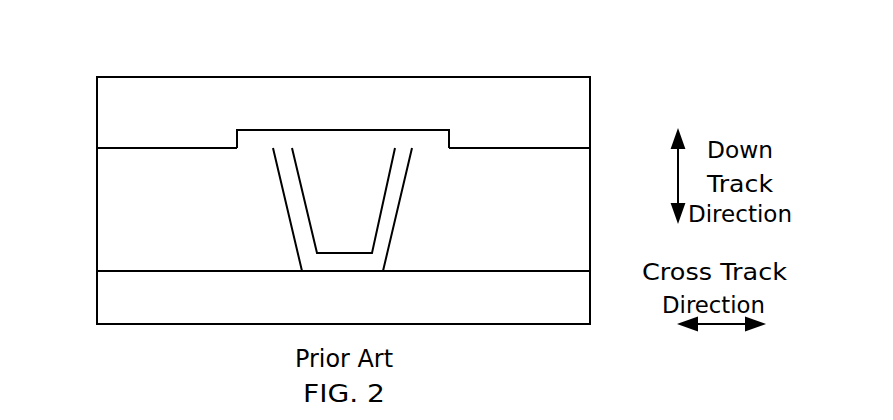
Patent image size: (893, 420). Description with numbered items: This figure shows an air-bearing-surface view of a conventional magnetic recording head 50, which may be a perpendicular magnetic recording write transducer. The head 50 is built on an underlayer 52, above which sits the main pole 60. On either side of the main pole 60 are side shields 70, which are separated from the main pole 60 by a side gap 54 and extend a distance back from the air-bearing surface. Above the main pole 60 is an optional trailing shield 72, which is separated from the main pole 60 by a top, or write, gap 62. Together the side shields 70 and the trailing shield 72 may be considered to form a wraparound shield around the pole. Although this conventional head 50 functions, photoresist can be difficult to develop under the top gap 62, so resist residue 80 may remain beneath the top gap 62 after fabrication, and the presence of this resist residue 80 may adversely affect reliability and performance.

The conventional magnetic recording head 50 is at (358, 37).
The underlayer 52 is at (343, 291).
The side gap 54 is at (290, 223).
The main pole 60 is at (343, 200).
The top (write) gap 62 is at (273, 130).
The side shields 70 is at (343, 213).
The trailing shield 72 is at (321, 123).
The resist residue 80 is at (413, 151).